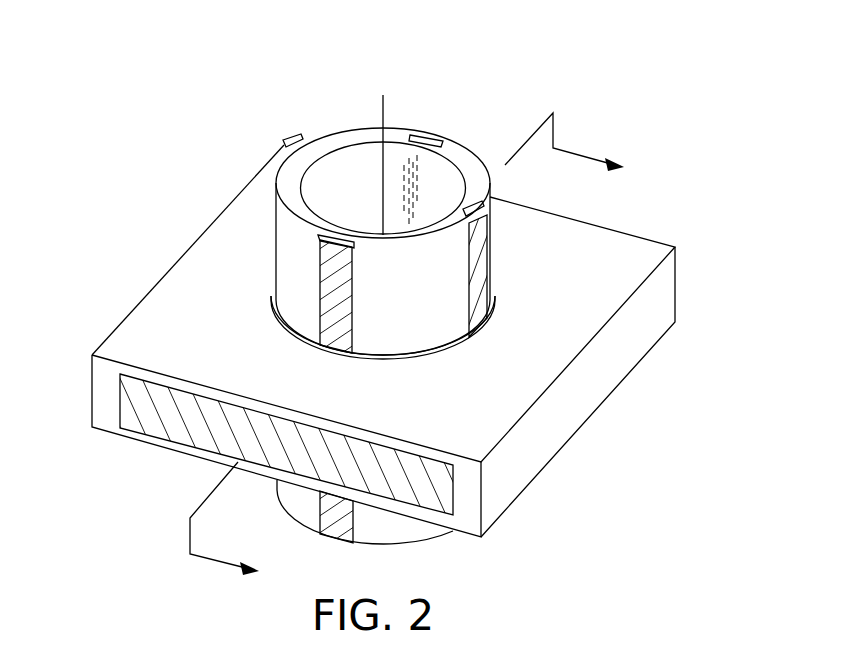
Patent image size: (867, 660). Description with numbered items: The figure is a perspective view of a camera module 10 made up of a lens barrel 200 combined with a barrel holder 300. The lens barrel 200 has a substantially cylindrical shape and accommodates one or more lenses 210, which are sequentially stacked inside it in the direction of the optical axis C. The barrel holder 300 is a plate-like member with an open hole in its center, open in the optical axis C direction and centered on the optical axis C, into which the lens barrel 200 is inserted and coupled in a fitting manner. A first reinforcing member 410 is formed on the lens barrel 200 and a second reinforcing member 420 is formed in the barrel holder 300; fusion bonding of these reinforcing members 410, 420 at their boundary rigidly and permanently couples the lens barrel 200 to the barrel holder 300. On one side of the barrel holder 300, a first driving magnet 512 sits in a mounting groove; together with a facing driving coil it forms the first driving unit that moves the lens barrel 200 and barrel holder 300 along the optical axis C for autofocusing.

The camera module 10 is at (427, 74).
The lens barrel 200 is at (455, 158).
The lens 210 is at (348, 167).
The barrel holder 300 is at (603, 362).
The first reinforcing member 410 is at (482, 288).
The second reinforcing member 420 is at (273, 300).
The first driving magnet 512 is at (164, 421).
The optical axis C is at (383, 150).